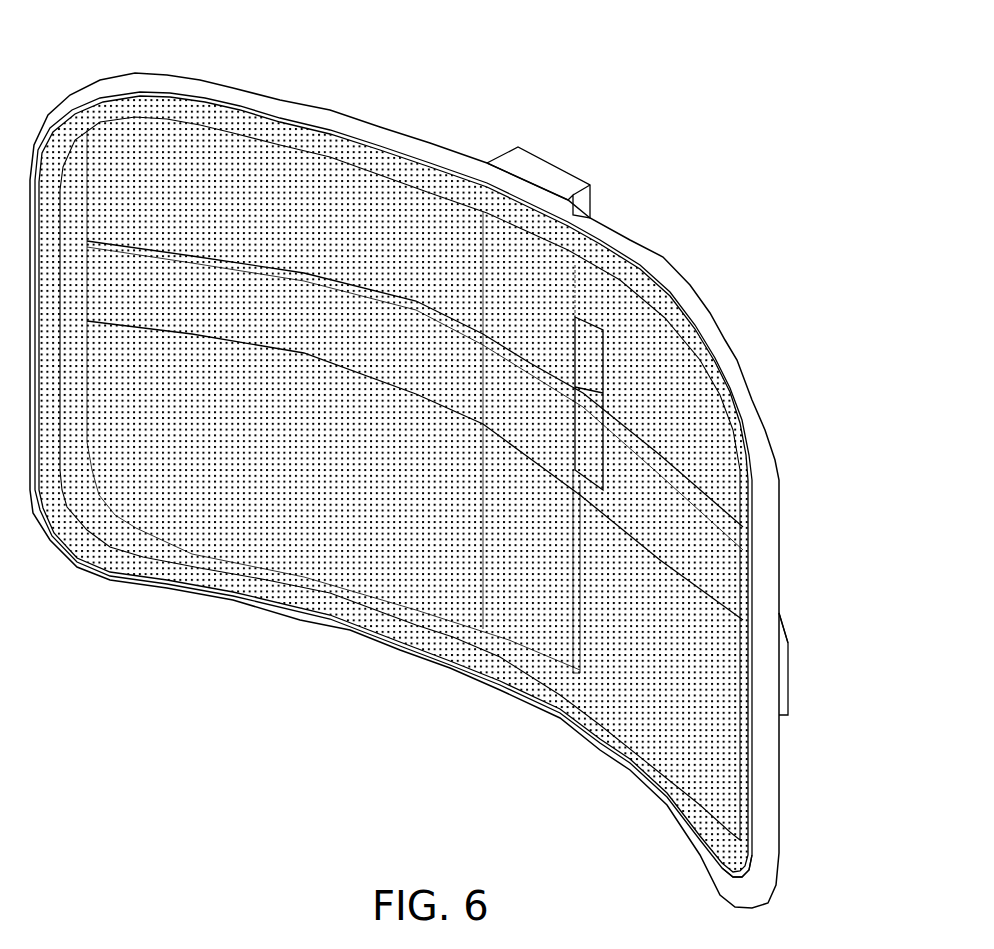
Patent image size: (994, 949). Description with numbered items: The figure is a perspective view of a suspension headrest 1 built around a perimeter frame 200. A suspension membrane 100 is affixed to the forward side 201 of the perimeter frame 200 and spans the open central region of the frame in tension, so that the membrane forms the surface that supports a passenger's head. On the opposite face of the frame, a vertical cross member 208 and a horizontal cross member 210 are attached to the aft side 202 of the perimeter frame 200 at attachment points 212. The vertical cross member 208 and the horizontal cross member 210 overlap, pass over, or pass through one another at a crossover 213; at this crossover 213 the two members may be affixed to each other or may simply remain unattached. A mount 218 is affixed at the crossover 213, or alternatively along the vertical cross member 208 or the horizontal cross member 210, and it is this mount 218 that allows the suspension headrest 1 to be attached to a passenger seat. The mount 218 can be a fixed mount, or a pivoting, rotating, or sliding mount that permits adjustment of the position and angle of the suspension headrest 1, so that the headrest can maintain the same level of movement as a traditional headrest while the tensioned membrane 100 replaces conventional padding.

The suspension headrest 1 is at (735, 206).
The suspension membrane 100 is at (697, 733).
The perimeter frame 200 is at (149, 82).
The forward side 201 is at (728, 875).
The aft side 202 is at (766, 407).
The vertical cross member 208 is at (545, 168).
The horizontal cross member 210 is at (787, 673).
The attachment points 212 is at (497, 162).
The crossover 213 is at (565, 430).
The mount 218 is at (588, 377).